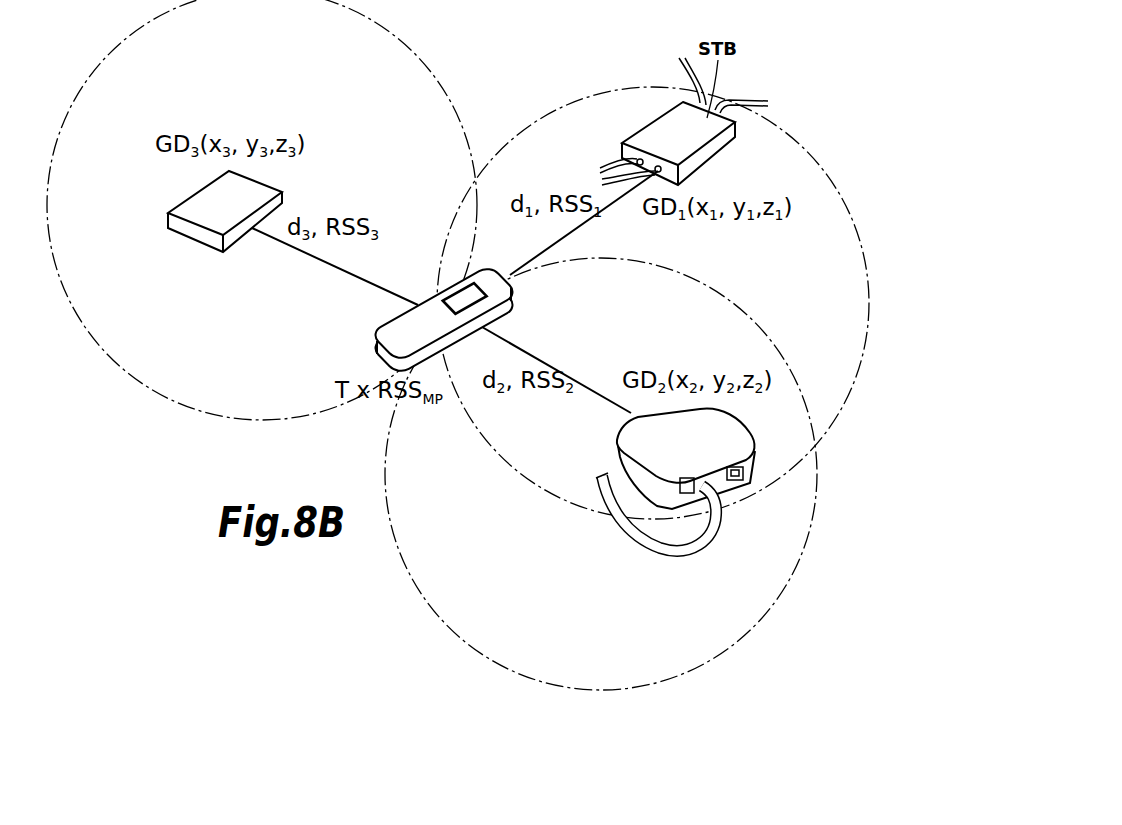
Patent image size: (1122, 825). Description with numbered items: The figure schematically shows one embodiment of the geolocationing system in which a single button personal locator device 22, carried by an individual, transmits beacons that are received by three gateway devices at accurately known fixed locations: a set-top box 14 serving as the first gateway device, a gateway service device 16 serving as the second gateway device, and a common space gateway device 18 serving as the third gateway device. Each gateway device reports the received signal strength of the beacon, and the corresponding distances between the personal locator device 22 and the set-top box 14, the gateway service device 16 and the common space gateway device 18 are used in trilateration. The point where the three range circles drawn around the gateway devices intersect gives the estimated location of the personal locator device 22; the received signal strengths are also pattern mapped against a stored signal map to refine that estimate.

The set-top box 14 is at (667, 130).
The gateway service device 16 is at (623, 428).
The common space gateway device 18 is at (187, 203).
The single button personal locator device 22 is at (393, 326).